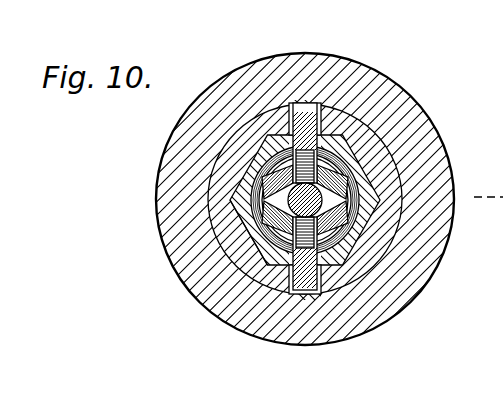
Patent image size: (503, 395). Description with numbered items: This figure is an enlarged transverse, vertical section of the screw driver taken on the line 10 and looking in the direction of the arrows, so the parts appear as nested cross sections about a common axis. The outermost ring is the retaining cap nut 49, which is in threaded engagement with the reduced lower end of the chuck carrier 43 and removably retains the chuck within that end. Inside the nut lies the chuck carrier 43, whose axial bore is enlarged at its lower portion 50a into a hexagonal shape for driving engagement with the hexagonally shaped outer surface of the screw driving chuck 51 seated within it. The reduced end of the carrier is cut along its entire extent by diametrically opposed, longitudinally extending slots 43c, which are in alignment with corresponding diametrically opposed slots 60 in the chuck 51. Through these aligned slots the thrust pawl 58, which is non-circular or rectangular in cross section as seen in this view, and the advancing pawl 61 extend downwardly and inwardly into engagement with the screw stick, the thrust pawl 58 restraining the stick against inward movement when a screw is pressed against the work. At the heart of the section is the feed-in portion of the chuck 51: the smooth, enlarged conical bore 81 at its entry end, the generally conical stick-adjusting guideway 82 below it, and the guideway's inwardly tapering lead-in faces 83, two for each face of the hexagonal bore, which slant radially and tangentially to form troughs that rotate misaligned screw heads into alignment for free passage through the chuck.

The section line 10 is at (305, 224).
The chuck carrier 43 is at (388, 125).
The slots 43c is at (312, 108).
The retaining cap nut 49 is at (402, 82).
The enlarged portion of the bore 50a is at (250, 262).
The screw driving chuck 51 is at (372, 180).
The thrust pawl 58 is at (302, 104).
The slots 60 is at (283, 160).
The advancing pawl 61 is at (318, 290).
The conical bore 81 is at (268, 180).
The stick-adjusting guideway 82 is at (266, 231).
The lead-in faces 83 is at (345, 222).